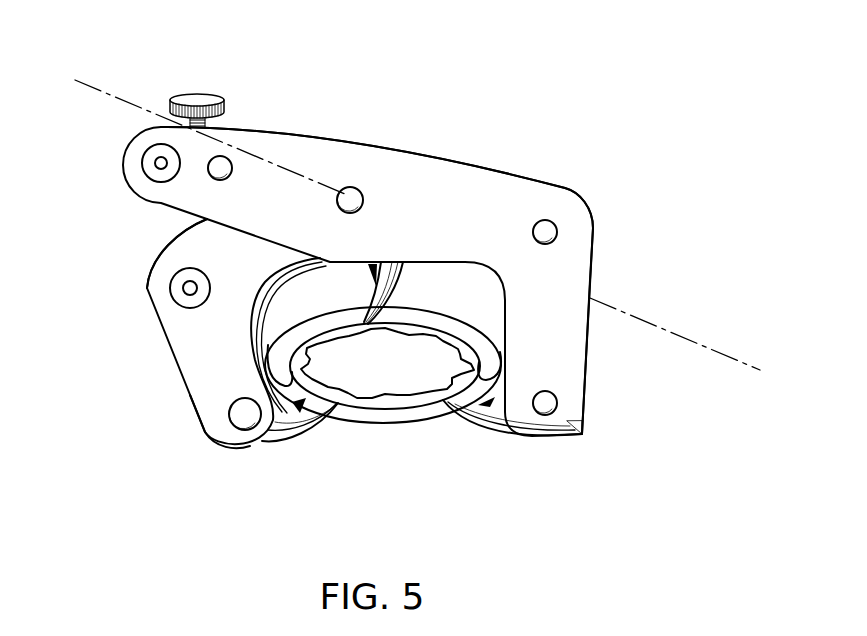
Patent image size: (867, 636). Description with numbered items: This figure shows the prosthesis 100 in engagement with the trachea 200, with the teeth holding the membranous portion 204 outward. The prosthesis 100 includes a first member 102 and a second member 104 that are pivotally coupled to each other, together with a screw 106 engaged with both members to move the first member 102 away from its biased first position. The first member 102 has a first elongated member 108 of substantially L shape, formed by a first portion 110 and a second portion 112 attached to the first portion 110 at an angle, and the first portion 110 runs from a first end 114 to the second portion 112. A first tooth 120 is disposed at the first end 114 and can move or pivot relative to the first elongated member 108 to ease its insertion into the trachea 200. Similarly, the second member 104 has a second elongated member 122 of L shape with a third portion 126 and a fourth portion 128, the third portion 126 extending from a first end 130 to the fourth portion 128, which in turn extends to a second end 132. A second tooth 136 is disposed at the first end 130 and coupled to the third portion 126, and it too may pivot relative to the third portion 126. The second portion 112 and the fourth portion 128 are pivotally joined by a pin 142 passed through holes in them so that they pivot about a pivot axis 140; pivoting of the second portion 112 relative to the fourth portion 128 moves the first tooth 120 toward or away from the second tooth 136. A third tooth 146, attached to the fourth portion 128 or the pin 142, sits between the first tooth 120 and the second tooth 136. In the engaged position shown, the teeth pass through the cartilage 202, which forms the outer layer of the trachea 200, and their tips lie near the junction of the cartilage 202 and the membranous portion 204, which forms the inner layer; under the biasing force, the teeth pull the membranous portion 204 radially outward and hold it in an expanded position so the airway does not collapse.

The prosthesis 100 is at (533, 167).
The first member 102 is at (158, 359).
The second member 104 is at (585, 267).
The screw 106 is at (196, 97).
The first elongated member 108 is at (173, 390).
The first portion 110 is at (147, 327).
The second portion 112 is at (203, 223).
The first end 114 is at (198, 425).
The first tooth 120 is at (291, 433).
The second elongated member 122 is at (594, 228).
The third portion 126 is at (567, 337).
The fourth portion 128 is at (470, 180).
The first end 130 is at (568, 395).
The second end 132 is at (140, 148).
The second tooth 136 is at (488, 428).
The pivot axis 140 is at (745, 362).
The pin 142 is at (347, 195).
The third tooth 146 is at (402, 281).
The trachea 200 is at (392, 440).
The cartilage 202 is at (344, 420).
The membranous portion 204 is at (440, 418).